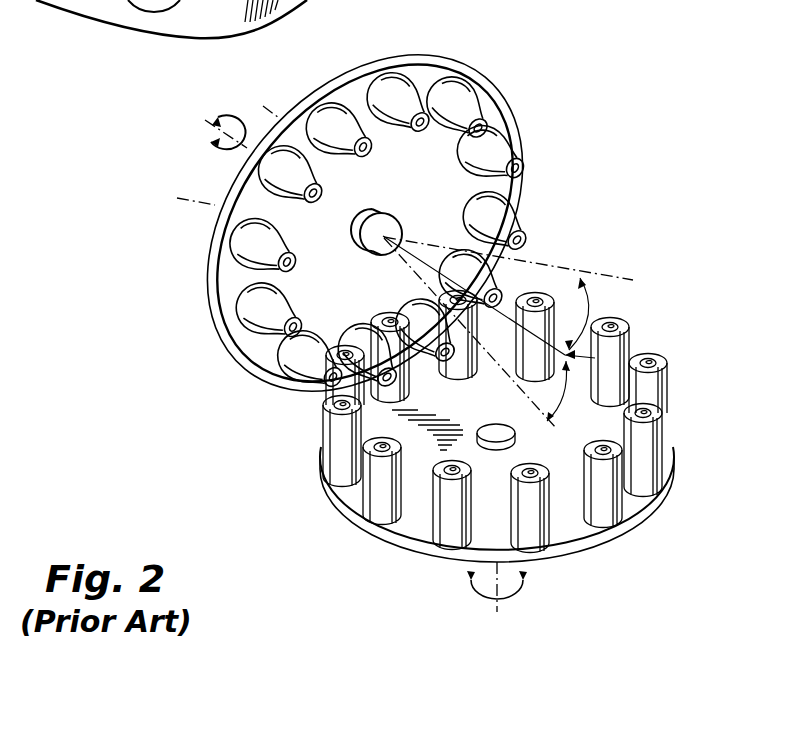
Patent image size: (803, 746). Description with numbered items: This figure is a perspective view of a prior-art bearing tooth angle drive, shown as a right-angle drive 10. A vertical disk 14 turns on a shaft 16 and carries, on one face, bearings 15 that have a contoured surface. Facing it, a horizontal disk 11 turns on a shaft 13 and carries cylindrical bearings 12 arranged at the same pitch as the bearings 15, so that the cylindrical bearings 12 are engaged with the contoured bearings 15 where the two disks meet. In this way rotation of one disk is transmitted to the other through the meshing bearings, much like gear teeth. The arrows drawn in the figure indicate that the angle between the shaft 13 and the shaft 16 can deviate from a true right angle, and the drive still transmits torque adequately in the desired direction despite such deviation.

The right-angle drive 10 is at (414, 306).
The horizontal disk 11 is at (388, 530).
The cylindrical bearings 12 is at (632, 336).
The shaft 13 is at (491, 435).
The vertical disk 14 is at (433, 62).
The bearings 15 is at (468, 113).
The shaft 16 is at (392, 214).